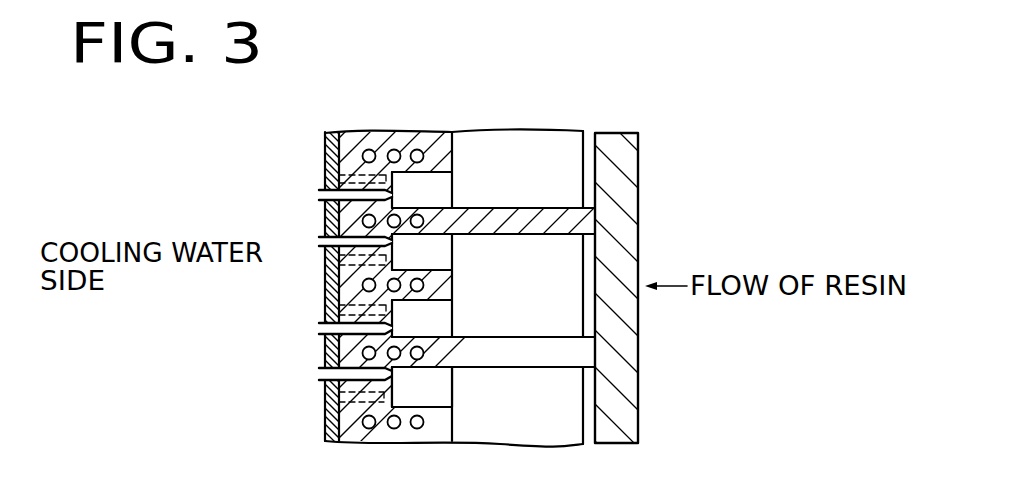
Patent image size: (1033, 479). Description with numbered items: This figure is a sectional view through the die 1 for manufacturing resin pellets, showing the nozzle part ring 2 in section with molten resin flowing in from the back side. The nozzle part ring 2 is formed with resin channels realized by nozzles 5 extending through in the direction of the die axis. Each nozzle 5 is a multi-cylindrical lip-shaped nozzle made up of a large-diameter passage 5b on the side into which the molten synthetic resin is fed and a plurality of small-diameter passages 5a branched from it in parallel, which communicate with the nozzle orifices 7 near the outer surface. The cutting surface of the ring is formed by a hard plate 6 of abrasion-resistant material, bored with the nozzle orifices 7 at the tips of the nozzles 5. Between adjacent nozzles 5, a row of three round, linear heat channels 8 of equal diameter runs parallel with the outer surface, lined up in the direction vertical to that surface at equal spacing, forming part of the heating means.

The die 1 is at (648, 152).
The nozzle part ring 2 is at (508, 131).
The nozzle 5 is at (432, 400).
The small-diameter passage 5a is at (395, 377).
The large-diameter passage 5b is at (435, 396).
The hard plate 6 is at (325, 299).
The nozzle orifice 7 is at (325, 195).
The heat channel 8 is at (367, 149).